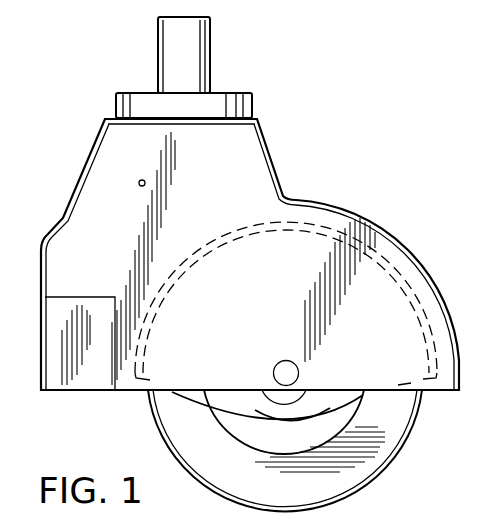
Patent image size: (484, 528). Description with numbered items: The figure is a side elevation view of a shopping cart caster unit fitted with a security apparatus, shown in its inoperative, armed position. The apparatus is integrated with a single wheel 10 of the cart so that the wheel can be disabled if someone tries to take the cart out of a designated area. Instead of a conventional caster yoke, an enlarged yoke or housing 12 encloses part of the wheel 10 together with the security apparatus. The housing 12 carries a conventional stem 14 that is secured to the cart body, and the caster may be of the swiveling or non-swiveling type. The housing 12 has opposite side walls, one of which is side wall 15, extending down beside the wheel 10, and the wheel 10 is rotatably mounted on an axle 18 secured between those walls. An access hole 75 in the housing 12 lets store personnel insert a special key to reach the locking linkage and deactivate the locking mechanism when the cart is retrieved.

The wheel 10 is at (372, 454).
The housing 12 is at (322, 191).
The stem 14 is at (195, 53).
The side wall 15 is at (177, 373).
The axle 18 is at (283, 362).
The access hole 75 is at (139, 182).